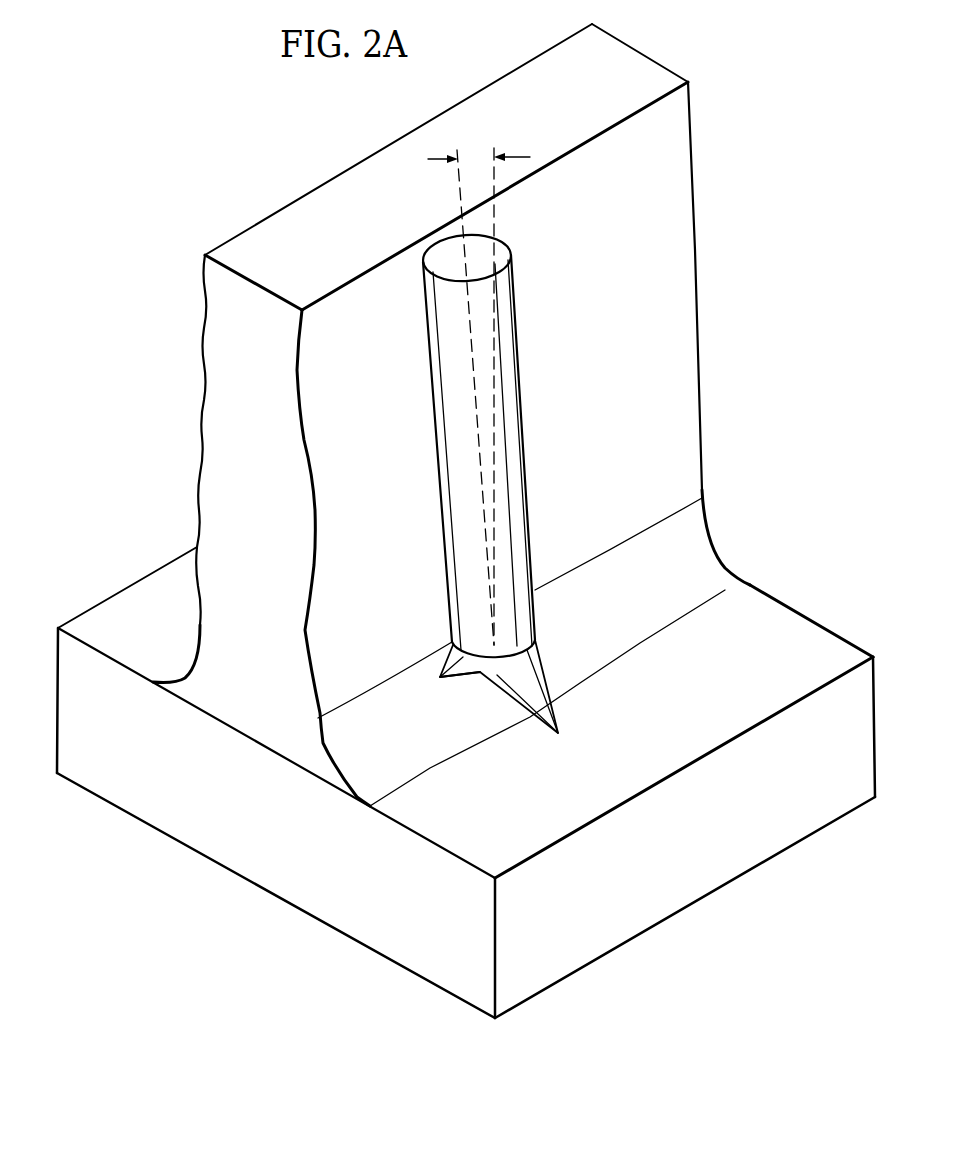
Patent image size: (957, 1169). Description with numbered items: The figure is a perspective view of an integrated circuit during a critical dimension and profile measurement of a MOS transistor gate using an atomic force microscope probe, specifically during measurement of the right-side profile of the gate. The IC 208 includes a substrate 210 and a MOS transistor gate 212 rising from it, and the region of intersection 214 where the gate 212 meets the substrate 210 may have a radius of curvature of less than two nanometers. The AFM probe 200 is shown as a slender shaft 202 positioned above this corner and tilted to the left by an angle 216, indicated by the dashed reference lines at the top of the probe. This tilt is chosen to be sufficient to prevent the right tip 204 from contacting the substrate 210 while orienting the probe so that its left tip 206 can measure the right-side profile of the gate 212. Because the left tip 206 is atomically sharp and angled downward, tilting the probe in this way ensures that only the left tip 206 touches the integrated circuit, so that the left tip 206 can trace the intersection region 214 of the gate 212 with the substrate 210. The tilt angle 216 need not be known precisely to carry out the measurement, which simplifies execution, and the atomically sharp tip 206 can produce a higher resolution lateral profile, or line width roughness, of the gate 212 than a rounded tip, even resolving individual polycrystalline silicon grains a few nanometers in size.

The AFM probe 200 is at (524, 420).
The cylindrical shaft 202 is at (522, 408).
The right tip 204 is at (515, 683).
The left tip 206 is at (468, 680).
The IC 208 is at (461, 415).
The substrate 210 is at (232, 862).
The MOS transistor gate 212 is at (217, 364).
The region of intersection 214 is at (753, 582).
The angle 216 is at (514, 157).